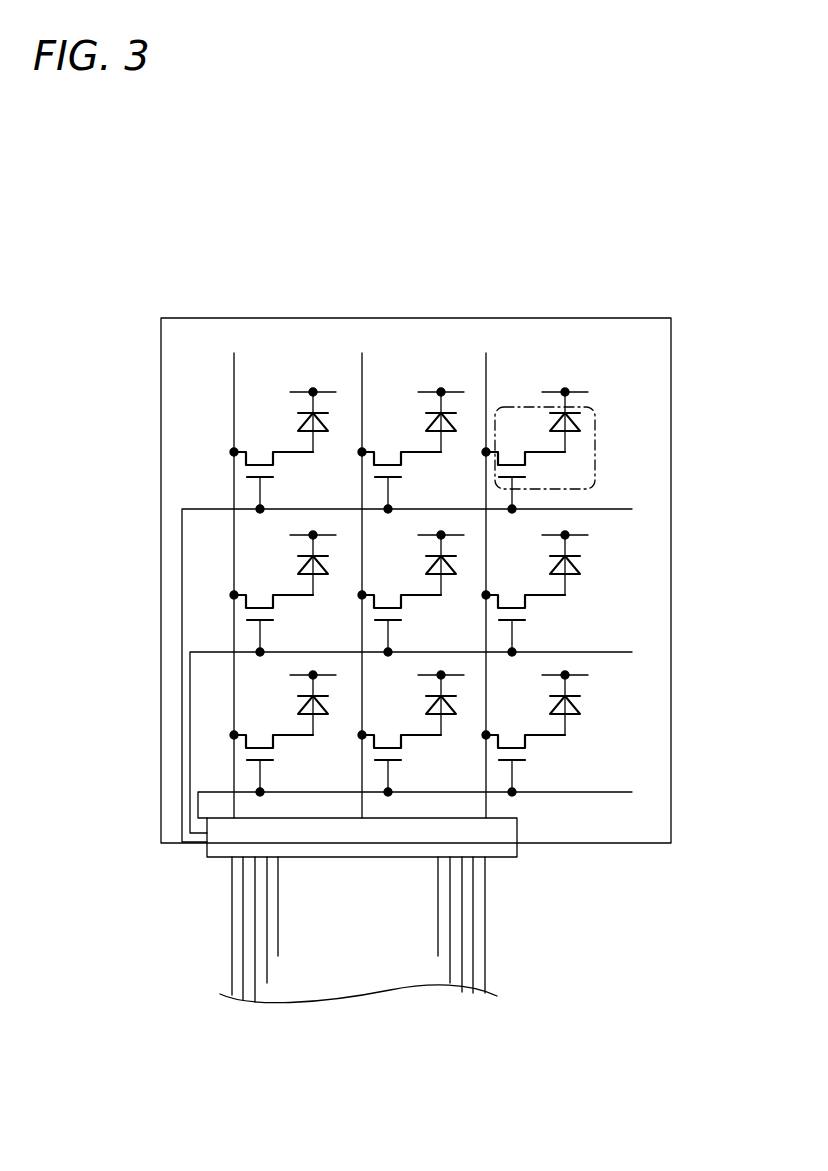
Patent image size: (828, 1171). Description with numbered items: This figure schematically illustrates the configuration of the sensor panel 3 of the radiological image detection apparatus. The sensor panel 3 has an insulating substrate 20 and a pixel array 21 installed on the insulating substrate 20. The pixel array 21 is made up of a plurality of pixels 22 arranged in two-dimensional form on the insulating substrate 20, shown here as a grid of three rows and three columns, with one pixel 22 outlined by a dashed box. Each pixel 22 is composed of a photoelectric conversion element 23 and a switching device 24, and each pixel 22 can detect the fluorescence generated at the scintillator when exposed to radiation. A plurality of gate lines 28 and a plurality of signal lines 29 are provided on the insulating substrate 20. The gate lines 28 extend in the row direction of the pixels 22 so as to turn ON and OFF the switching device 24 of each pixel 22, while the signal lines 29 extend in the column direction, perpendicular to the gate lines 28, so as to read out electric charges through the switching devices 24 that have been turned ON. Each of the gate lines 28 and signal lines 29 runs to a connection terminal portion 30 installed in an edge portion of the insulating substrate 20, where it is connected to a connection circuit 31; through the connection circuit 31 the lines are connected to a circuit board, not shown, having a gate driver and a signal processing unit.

The sensor panel 3 is at (613, 288).
The insulating substrate 20 is at (230, 318).
The pixel array 21 is at (617, 423).
The pixel 22 is at (596, 418).
The photoelectric conversion element 23 is at (461, 588).
The switching device 24 is at (397, 586).
The gate line 28 is at (617, 512).
The signal line 29 is at (235, 372).
The connection terminal portion 30 is at (500, 853).
The connection circuit 31 is at (478, 943).